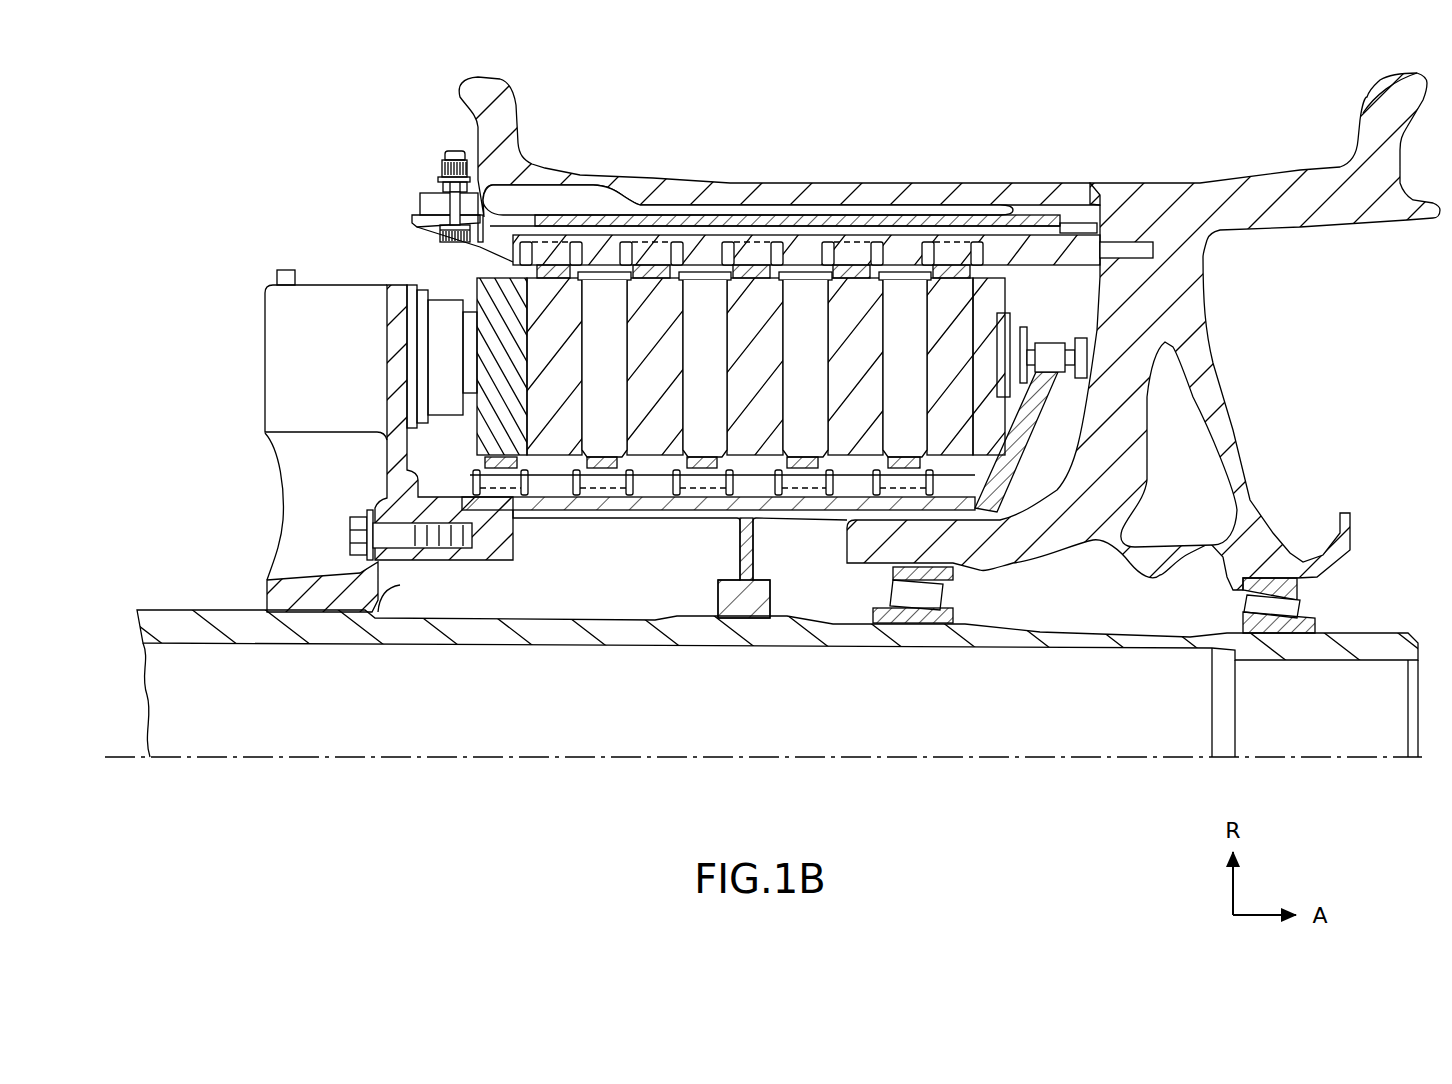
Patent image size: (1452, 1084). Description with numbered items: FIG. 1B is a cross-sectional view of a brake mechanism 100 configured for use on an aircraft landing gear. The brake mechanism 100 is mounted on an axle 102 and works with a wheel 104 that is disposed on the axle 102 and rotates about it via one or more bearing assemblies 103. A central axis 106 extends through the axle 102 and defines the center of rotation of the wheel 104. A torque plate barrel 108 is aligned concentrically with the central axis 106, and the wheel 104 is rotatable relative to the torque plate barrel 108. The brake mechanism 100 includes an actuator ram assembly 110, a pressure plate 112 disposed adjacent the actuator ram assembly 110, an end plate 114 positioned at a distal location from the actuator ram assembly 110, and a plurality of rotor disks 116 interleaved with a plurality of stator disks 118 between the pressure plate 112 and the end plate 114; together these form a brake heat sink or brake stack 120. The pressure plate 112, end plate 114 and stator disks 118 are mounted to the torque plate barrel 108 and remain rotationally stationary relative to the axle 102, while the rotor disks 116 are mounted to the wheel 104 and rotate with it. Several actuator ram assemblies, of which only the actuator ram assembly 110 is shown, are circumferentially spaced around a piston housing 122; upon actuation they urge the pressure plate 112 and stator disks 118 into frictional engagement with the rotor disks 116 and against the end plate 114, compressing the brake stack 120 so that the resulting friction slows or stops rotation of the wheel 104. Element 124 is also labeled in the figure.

The brake mechanism 100 is at (262, 145).
The axle 102 is at (1073, 645).
The bearing assemblies 103 is at (1290, 610).
The wheel 104 is at (1170, 287).
The central axis 106 is at (1026, 760).
The torque plate barrel 108 is at (579, 523).
The actuator ram assembly 110 is at (352, 262).
The pressure plate 112 is at (480, 290).
The end plate 114 is at (1000, 296).
The rotor disks 116 is at (556, 298).
The stator disks 118 is at (705, 290).
The brake stack 120 is at (866, 296).
The piston housing 122 is at (276, 338).
The key 124 is at (278, 274).